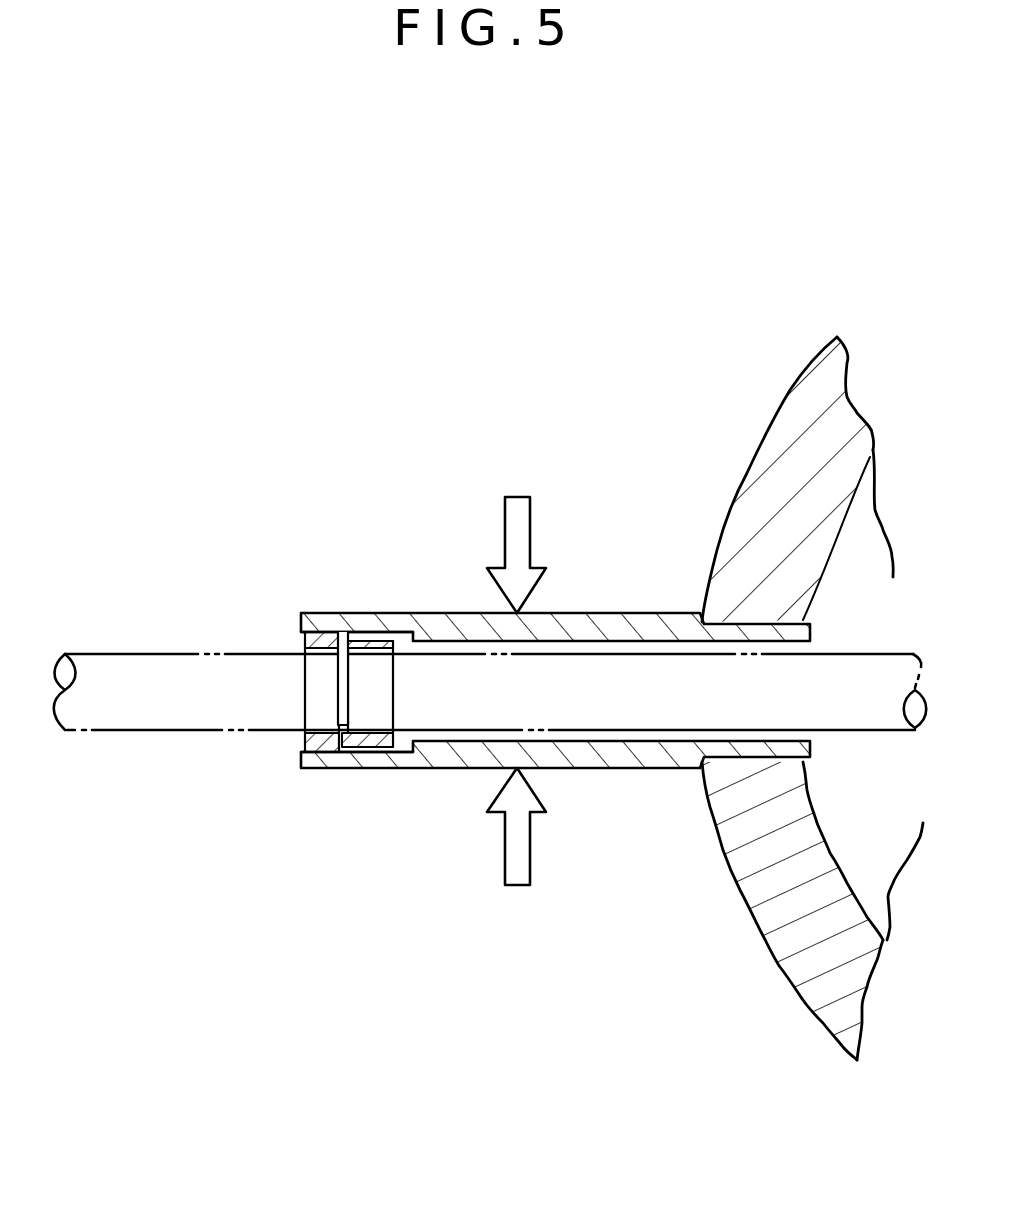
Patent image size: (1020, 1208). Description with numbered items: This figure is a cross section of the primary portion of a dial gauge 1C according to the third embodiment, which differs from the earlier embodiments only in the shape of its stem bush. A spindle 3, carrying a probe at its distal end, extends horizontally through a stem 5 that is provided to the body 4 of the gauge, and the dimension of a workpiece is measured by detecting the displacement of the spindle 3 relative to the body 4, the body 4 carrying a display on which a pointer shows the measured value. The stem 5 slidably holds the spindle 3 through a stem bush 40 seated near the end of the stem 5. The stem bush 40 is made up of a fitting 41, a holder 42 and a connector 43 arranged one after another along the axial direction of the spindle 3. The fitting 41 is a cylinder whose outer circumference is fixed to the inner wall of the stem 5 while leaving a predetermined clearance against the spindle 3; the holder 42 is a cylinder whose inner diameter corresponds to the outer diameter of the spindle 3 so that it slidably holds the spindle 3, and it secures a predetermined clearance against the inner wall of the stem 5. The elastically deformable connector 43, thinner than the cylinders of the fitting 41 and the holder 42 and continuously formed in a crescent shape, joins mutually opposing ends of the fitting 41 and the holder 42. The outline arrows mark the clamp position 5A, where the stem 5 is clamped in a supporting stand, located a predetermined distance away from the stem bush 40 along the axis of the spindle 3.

The dial gauge 1C is at (526, 647).
The spindle 3 is at (141, 734).
The body 4 is at (756, 493).
The stem 5 is at (668, 622).
The clamp position 5A is at (530, 530).
The stem bush 40 is at (323, 628).
The fitting 41 is at (303, 753).
The holder 42 is at (375, 753).
The connector 43 is at (337, 754).